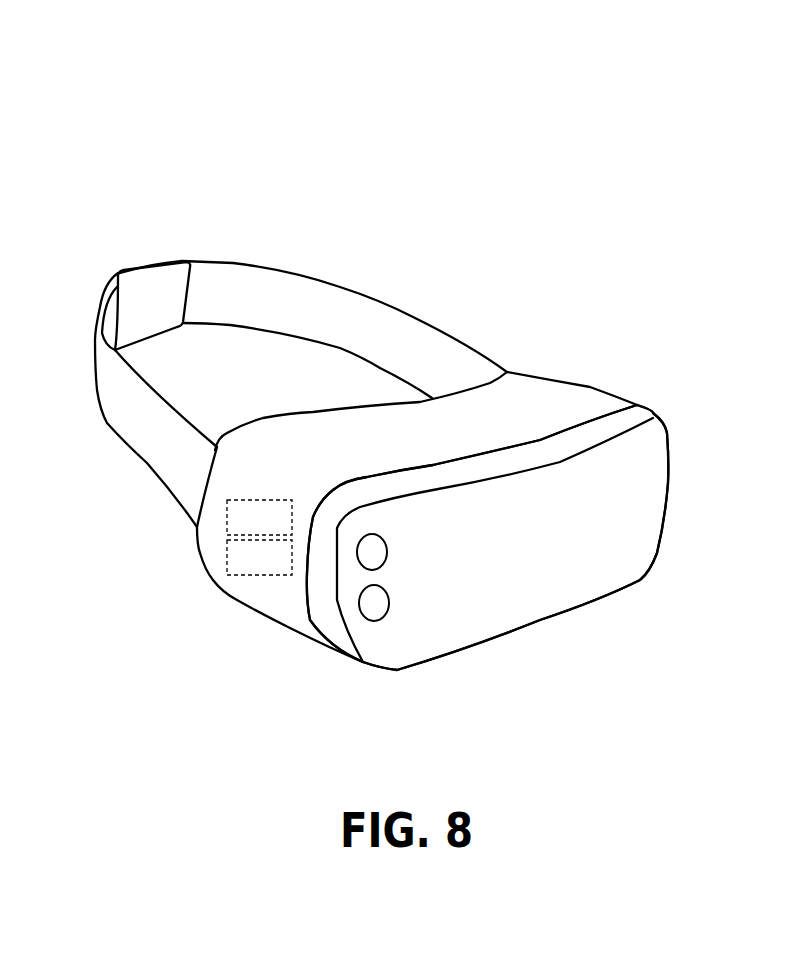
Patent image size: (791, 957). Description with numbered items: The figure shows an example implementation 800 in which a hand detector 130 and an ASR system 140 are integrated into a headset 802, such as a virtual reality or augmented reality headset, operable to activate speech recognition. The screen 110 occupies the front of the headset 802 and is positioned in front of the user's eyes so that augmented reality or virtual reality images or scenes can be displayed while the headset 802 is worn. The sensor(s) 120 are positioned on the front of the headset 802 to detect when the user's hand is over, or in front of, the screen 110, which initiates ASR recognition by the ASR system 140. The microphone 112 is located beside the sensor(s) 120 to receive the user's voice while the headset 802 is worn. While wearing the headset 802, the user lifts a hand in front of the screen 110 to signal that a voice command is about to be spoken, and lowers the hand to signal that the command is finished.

The implementation 800 is at (633, 92).
The headset 802 is at (620, 403).
The screen 110 is at (513, 541).
The hand detector 130 is at (281, 530).
The ASR system 140 is at (281, 570).
The sensor(s) 120 is at (357, 553).
The microphone 112 is at (360, 603).